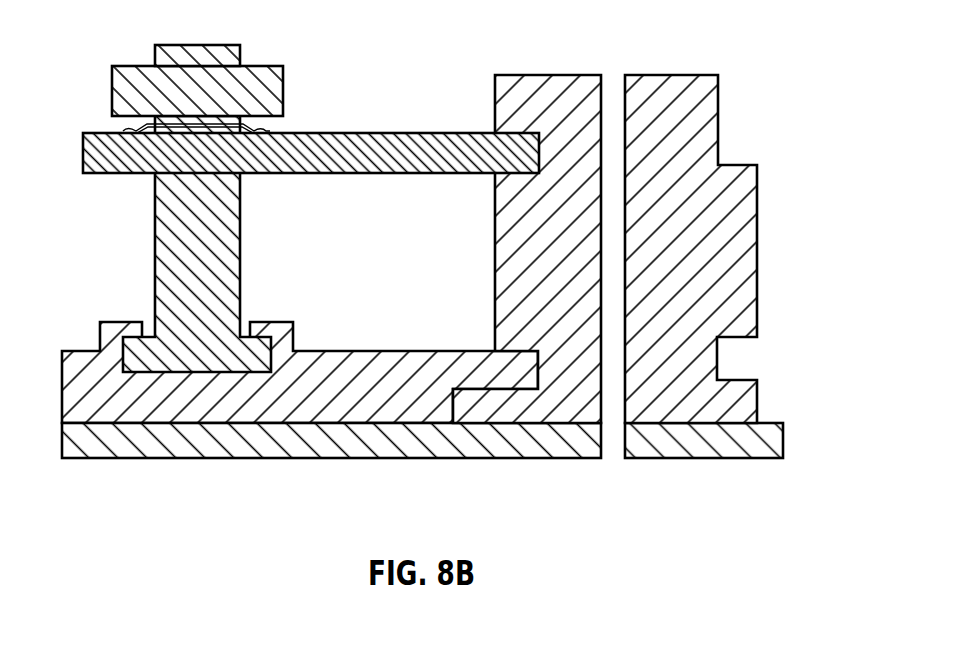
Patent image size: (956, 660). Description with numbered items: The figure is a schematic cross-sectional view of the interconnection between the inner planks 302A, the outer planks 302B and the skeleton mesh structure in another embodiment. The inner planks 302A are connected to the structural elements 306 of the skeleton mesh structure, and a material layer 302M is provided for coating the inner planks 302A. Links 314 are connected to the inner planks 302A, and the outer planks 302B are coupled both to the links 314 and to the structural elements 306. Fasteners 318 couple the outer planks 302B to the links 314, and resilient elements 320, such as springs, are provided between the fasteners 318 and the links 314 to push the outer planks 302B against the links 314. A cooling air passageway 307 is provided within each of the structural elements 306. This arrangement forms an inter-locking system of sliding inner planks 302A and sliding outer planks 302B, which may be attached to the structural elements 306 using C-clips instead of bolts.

The inner plank 302A is at (350, 415).
The outer plank 302B is at (368, 133).
The material layer 302M is at (463, 435).
The structural element 306 is at (510, 252).
The cooling air passageway 307 is at (613, 443).
The link 314 is at (240, 258).
The fastener 318 is at (257, 72).
The resilient element 320 is at (140, 133).